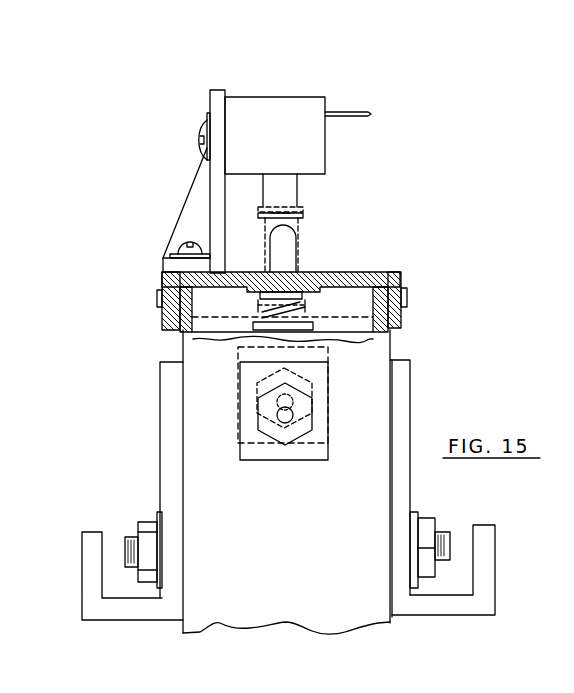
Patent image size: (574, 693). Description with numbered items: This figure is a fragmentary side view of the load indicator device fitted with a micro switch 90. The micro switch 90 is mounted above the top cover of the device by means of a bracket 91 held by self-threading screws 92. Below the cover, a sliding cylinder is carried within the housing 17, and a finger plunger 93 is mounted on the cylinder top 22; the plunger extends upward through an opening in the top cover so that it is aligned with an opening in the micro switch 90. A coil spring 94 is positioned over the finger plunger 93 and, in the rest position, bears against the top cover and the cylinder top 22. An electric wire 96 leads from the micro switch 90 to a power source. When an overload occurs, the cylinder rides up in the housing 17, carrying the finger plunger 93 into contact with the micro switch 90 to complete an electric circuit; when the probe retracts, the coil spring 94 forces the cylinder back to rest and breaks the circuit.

The housing 17 is at (217, 507).
The cylinder top 22 is at (327, 333).
The micro switch 90 is at (297, 108).
The bracket 91 is at (218, 113).
The self-threading screws 92 is at (190, 250).
The finger plunger 93 is at (283, 258).
The coil spring 94 is at (311, 305).
The electric wire 96 is at (352, 116).